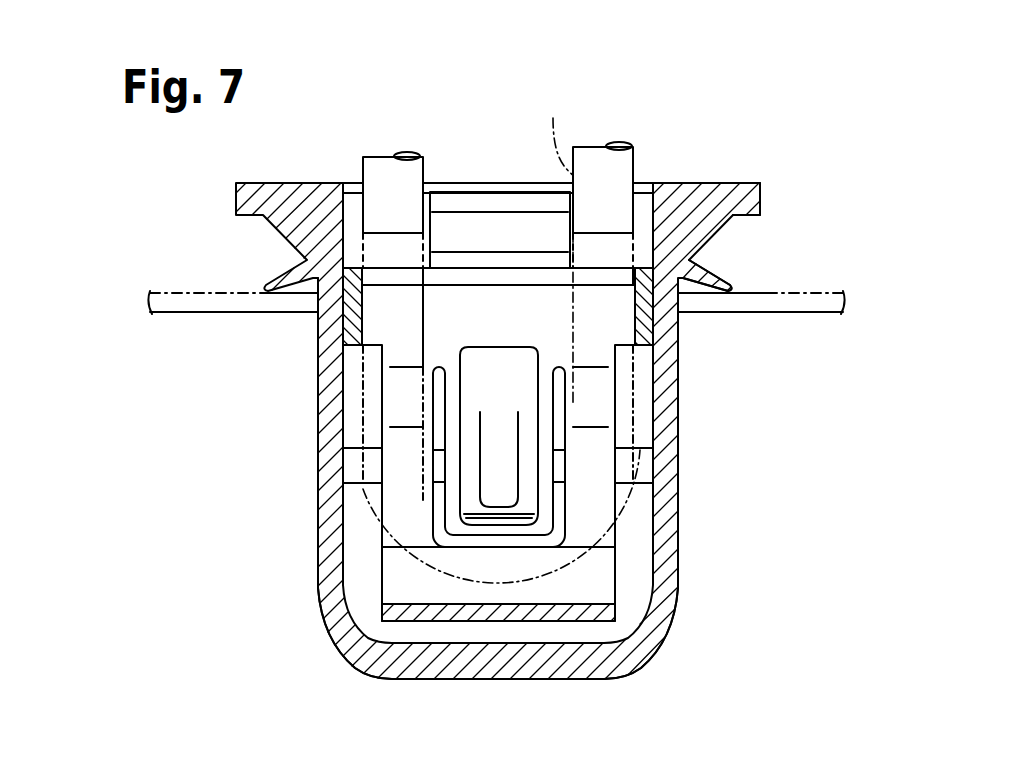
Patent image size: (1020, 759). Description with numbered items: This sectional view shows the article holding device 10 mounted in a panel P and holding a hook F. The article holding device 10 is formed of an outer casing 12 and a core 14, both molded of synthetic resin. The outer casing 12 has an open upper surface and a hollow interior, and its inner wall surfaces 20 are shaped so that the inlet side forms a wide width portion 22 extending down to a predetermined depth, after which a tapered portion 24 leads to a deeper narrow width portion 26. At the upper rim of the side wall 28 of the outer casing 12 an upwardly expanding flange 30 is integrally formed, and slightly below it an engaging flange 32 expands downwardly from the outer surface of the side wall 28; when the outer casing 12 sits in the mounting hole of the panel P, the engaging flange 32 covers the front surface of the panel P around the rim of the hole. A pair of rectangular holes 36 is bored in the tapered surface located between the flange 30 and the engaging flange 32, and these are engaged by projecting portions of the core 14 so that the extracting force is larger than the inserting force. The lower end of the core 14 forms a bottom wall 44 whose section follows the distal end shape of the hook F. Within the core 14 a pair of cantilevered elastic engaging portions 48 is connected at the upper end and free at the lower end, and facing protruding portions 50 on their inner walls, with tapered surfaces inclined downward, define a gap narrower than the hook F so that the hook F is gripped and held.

The article holding device 10 is at (742, 137).
The outer casing 12 is at (660, 184).
The core 14 is at (518, 269).
The inner wall surfaces 20 is at (353, 214).
The wide width portion 22 is at (645, 393).
The tapered portion 24 is at (647, 462).
The narrow width portion 26 is at (638, 537).
The side wall 28 is at (318, 463).
The flange 30 is at (746, 202).
The engaging flange 32 is at (716, 278).
The rectangular holes 36 is at (474, 215).
The bottom wall 44 is at (428, 597).
The elastic engaging portions 48 is at (480, 395).
The protruding portions 50 is at (467, 512).
The hook F is at (501, 336).
The panel P is at (811, 292).